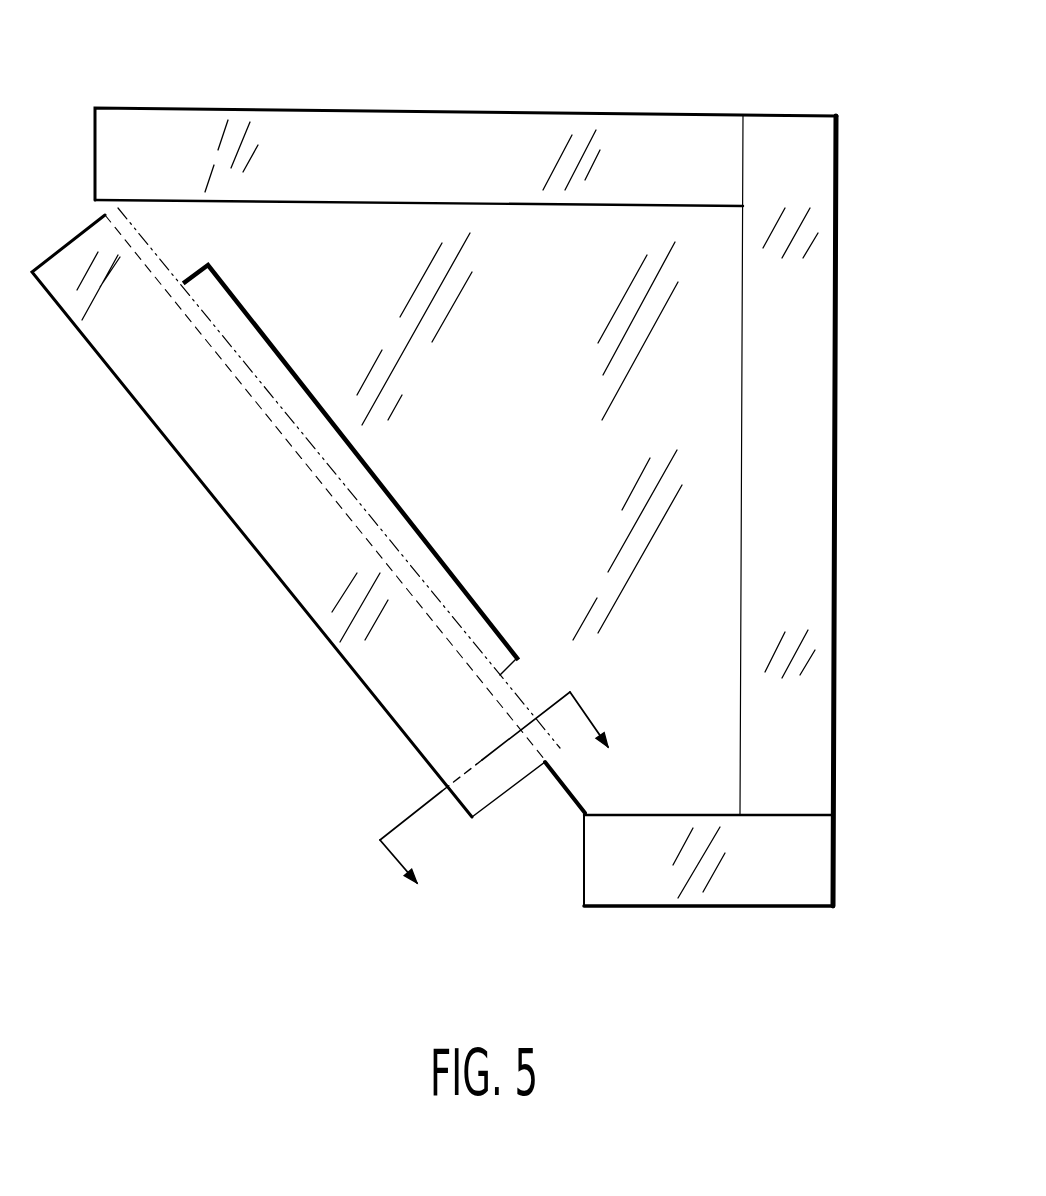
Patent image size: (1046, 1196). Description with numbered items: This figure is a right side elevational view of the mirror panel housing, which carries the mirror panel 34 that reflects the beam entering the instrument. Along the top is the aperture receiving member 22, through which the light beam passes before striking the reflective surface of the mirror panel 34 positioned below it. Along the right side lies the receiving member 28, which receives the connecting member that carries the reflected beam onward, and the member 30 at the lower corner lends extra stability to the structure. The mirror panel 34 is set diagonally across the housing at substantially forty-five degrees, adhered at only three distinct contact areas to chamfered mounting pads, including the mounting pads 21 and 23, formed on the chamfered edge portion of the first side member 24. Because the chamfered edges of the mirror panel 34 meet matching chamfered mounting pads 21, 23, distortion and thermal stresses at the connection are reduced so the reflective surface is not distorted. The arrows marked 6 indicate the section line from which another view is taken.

The mounting pad 21 is at (513, 702).
The aperture receiving member 22 is at (453, 135).
The mounting pad 23 is at (140, 243).
The first side member 24 is at (710, 555).
The receiving member 28 is at (813, 350).
The member 30 is at (776, 888).
The mirror panel 34 is at (292, 565).
The section line 6- 6 is at (501, 802).